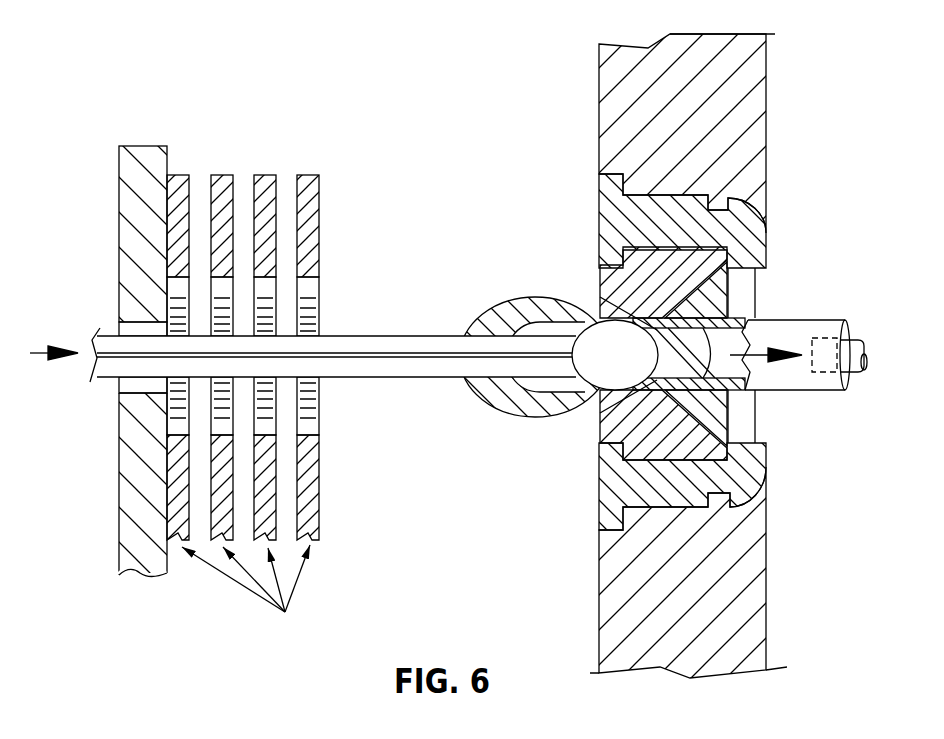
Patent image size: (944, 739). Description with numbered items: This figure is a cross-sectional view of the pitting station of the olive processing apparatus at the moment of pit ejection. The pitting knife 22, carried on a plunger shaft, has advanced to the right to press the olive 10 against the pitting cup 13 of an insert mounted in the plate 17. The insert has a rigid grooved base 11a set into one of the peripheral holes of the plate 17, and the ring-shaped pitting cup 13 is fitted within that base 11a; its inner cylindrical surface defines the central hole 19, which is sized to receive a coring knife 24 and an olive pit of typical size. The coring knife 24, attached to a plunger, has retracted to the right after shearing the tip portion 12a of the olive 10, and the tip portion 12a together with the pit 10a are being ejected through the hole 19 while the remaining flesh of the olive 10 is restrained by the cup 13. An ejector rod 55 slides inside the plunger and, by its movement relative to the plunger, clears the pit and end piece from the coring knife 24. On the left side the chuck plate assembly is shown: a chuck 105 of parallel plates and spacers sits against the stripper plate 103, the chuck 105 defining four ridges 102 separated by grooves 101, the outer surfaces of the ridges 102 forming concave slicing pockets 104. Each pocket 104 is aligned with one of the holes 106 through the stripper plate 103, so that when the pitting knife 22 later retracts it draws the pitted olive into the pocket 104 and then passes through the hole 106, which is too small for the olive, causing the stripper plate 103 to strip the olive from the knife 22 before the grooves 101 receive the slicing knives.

The olive 10 is at (495, 317).
The pit 10a is at (590, 320).
The grooved base 11a is at (603, 212).
The tip portion 12a is at (700, 367).
The pitting cup 13 is at (610, 245).
The plate 17 is at (600, 143).
The hole 19 is at (670, 295).
The pitting knife 22 is at (398, 336).
The coring knife 24 is at (743, 322).
The ejector rod 55 is at (835, 330).
The groove 101 is at (320, 305).
The ridges 102 is at (285, 315).
The stripper plate 103 is at (142, 162).
The slicing pocket 104 is at (313, 275).
The chuck 105 is at (247, 595).
The holes 106 is at (140, 322).